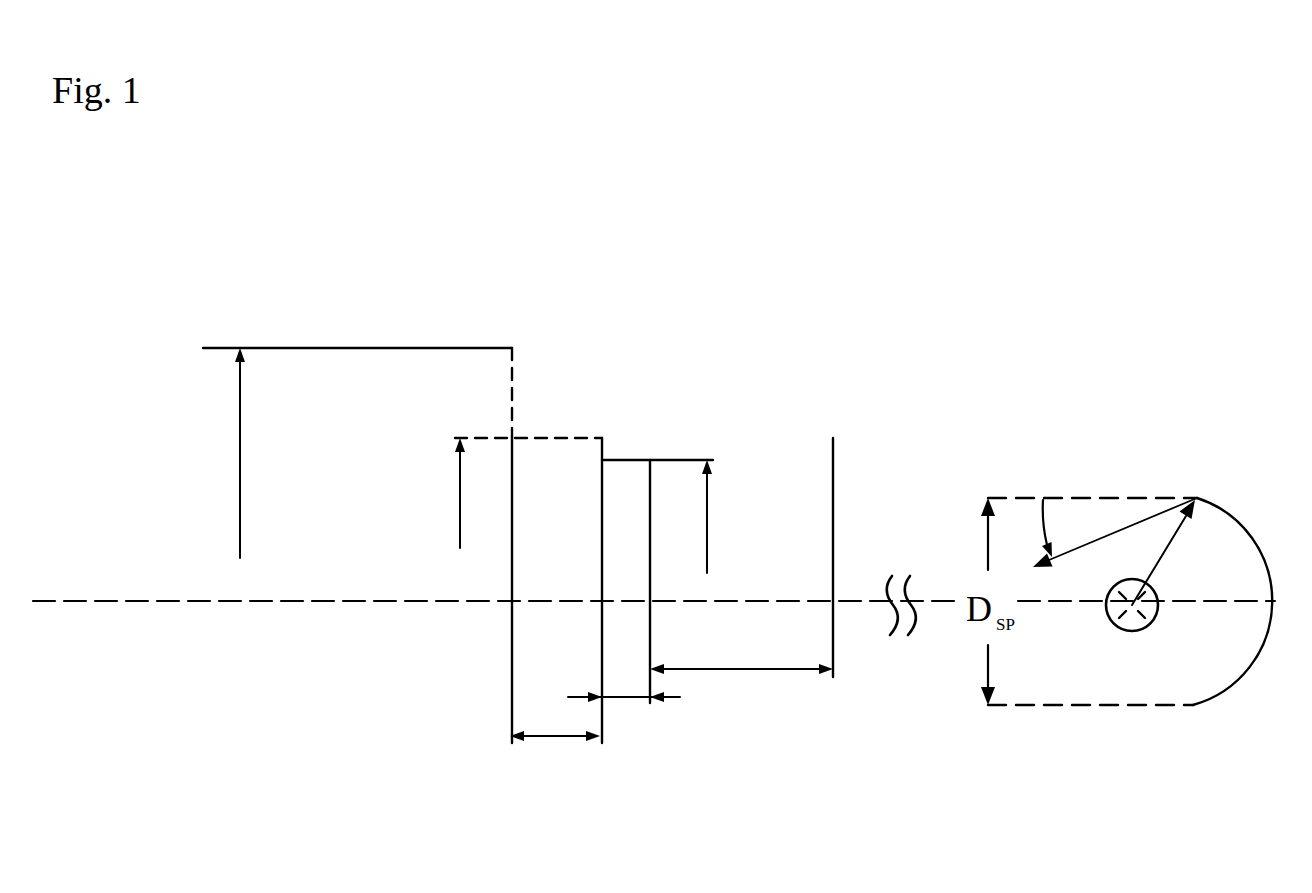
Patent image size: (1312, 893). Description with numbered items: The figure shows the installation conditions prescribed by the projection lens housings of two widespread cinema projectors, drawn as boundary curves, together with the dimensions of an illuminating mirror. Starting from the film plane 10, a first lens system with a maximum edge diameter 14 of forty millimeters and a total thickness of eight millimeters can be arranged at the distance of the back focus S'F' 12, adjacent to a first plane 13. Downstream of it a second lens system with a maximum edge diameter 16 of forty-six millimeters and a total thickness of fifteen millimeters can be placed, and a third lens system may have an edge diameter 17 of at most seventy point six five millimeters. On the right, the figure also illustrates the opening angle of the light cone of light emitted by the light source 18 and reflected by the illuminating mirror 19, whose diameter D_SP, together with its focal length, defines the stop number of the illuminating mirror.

The film plane 10 is at (835, 513).
The back focus S'F' 12 is at (733, 675).
The first plane 13 is at (650, 580).
The maximum edge diameter of a first lens system 14 is at (622, 458).
The maximum edge diameter of a second lens system 16 is at (565, 437).
The maximum edge diameter of a third lens system 17 is at (387, 348).
The light source 18 is at (1112, 628).
The illuminating mirror 19 is at (1225, 690).